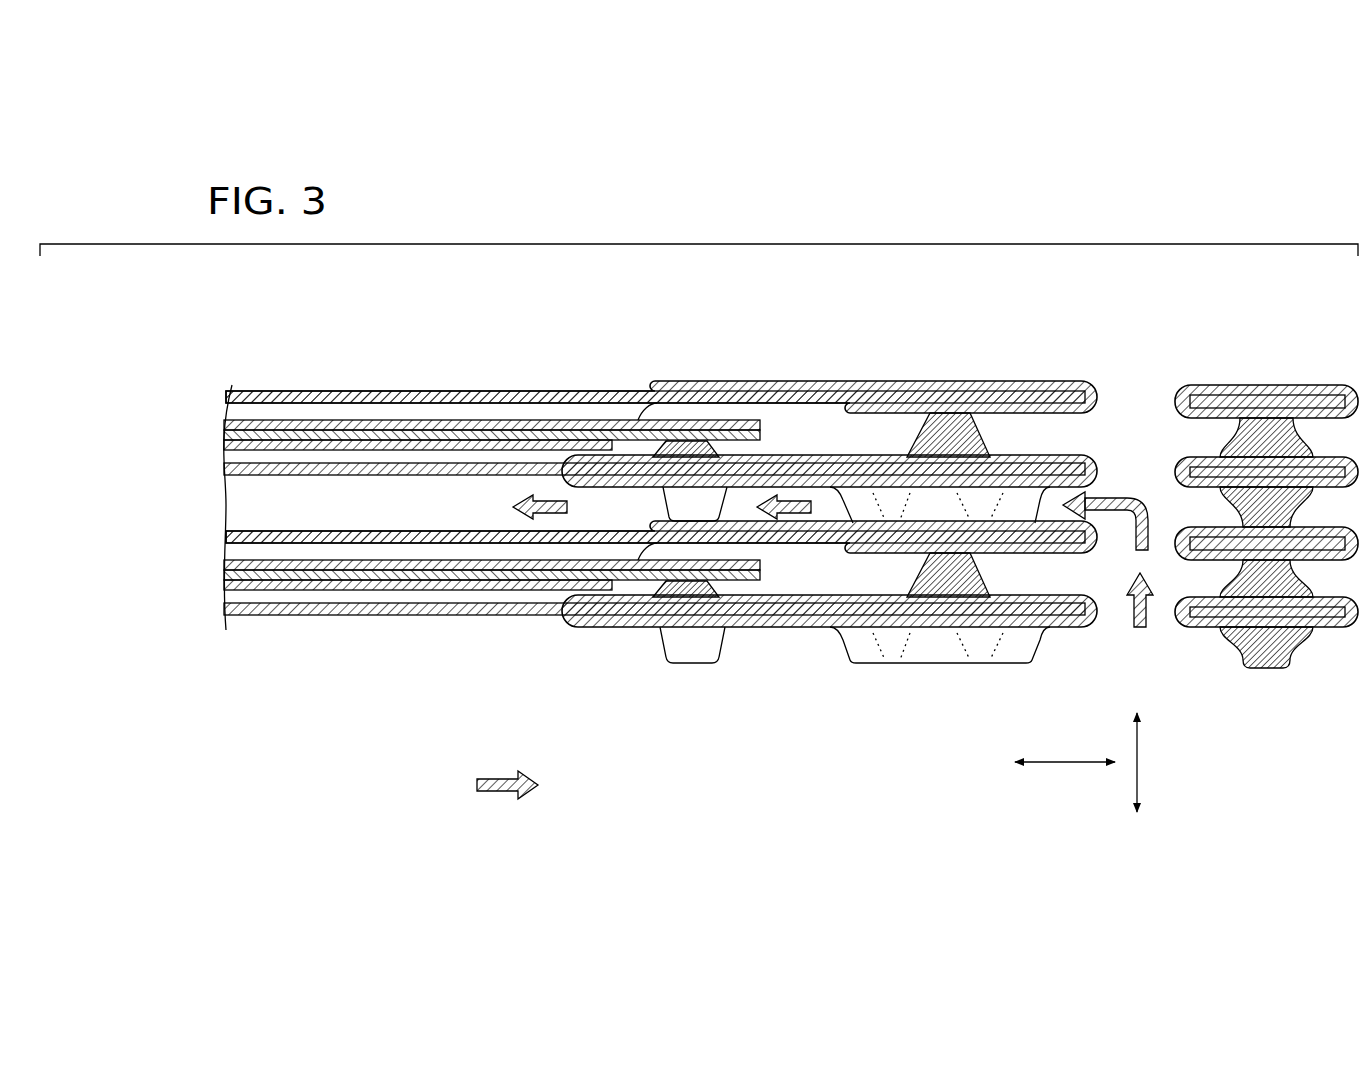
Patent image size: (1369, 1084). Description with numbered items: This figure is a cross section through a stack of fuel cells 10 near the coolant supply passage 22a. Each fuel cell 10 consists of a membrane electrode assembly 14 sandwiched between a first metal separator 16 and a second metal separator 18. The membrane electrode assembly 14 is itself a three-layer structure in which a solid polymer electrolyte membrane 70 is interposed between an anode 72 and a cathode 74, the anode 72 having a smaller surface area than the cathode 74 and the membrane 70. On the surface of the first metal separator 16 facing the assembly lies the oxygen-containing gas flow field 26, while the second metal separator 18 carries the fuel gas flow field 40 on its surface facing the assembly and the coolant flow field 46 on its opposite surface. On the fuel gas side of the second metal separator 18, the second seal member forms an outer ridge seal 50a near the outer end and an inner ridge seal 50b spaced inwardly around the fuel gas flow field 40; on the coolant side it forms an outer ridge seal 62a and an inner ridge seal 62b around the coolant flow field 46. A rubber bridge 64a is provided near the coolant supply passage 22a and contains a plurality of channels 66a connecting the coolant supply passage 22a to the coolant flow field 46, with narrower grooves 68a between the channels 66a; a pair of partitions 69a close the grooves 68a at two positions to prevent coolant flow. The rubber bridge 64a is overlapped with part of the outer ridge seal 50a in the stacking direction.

The fuel cell 10 is at (1018, 294).
The membrane electrode assembly 14 is at (212, 432).
The first metal separator 16 is at (212, 468).
The second metal separator 18 is at (212, 401).
The coolant supply passage 22a is at (1128, 405).
The oxygen-containing gas flow field 26 is at (373, 410).
The fuel gas flow field 40 is at (450, 455).
The coolant flow field 46 is at (459, 510).
The outer ridge seal 50a is at (946, 438).
The inner ridge seal 50b is at (678, 440).
The outer ridge seal 62a is at (1300, 512).
The inner ridge seal 62b is at (693, 503).
The rubber bridge 64a is at (1031, 504).
The channels 66a is at (998, 515).
The grooves 68a is at (977, 386).
The partitions 69a is at (875, 433).
The solid polymer electrolyte membrane 70 is at (318, 578).
The anode 72 is at (356, 586).
The cathode 74 is at (273, 566).